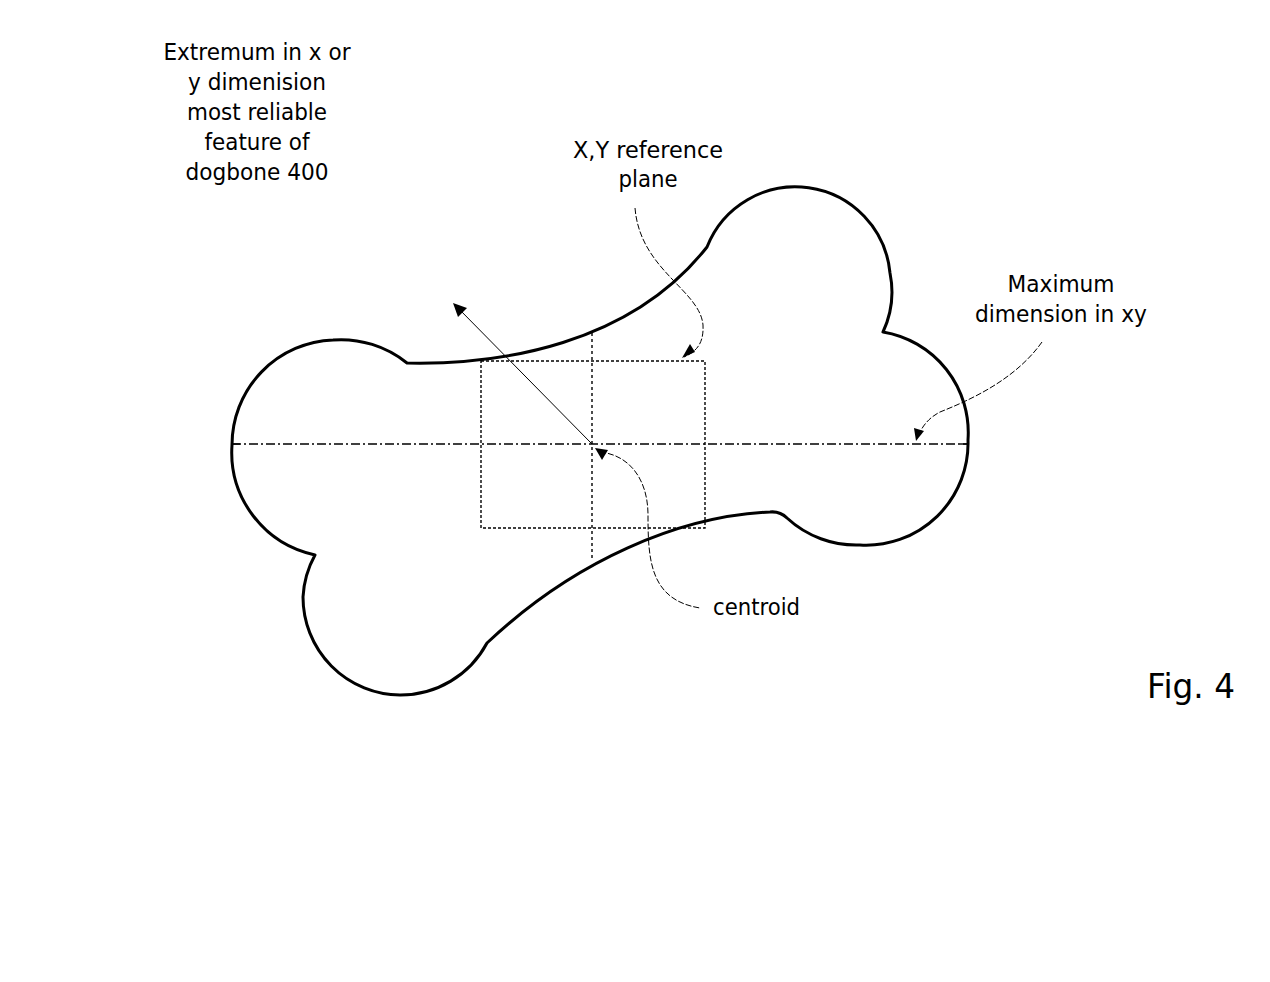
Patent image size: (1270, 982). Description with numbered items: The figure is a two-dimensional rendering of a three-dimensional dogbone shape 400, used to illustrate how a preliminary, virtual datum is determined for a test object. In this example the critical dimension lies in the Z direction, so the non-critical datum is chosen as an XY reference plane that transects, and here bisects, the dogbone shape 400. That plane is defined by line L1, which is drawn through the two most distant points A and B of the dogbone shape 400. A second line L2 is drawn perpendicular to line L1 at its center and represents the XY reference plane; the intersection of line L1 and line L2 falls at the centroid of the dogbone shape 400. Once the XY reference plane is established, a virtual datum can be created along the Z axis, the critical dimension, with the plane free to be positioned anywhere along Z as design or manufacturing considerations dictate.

The dogbone shape 400 is at (1107, 483).
The line L1 is at (600, 427).
The line L2 is at (571, 451).
The Z direction Z is at (522, 363).
The most distant point A is at (985, 437).
The most distant point B is at (213, 449).